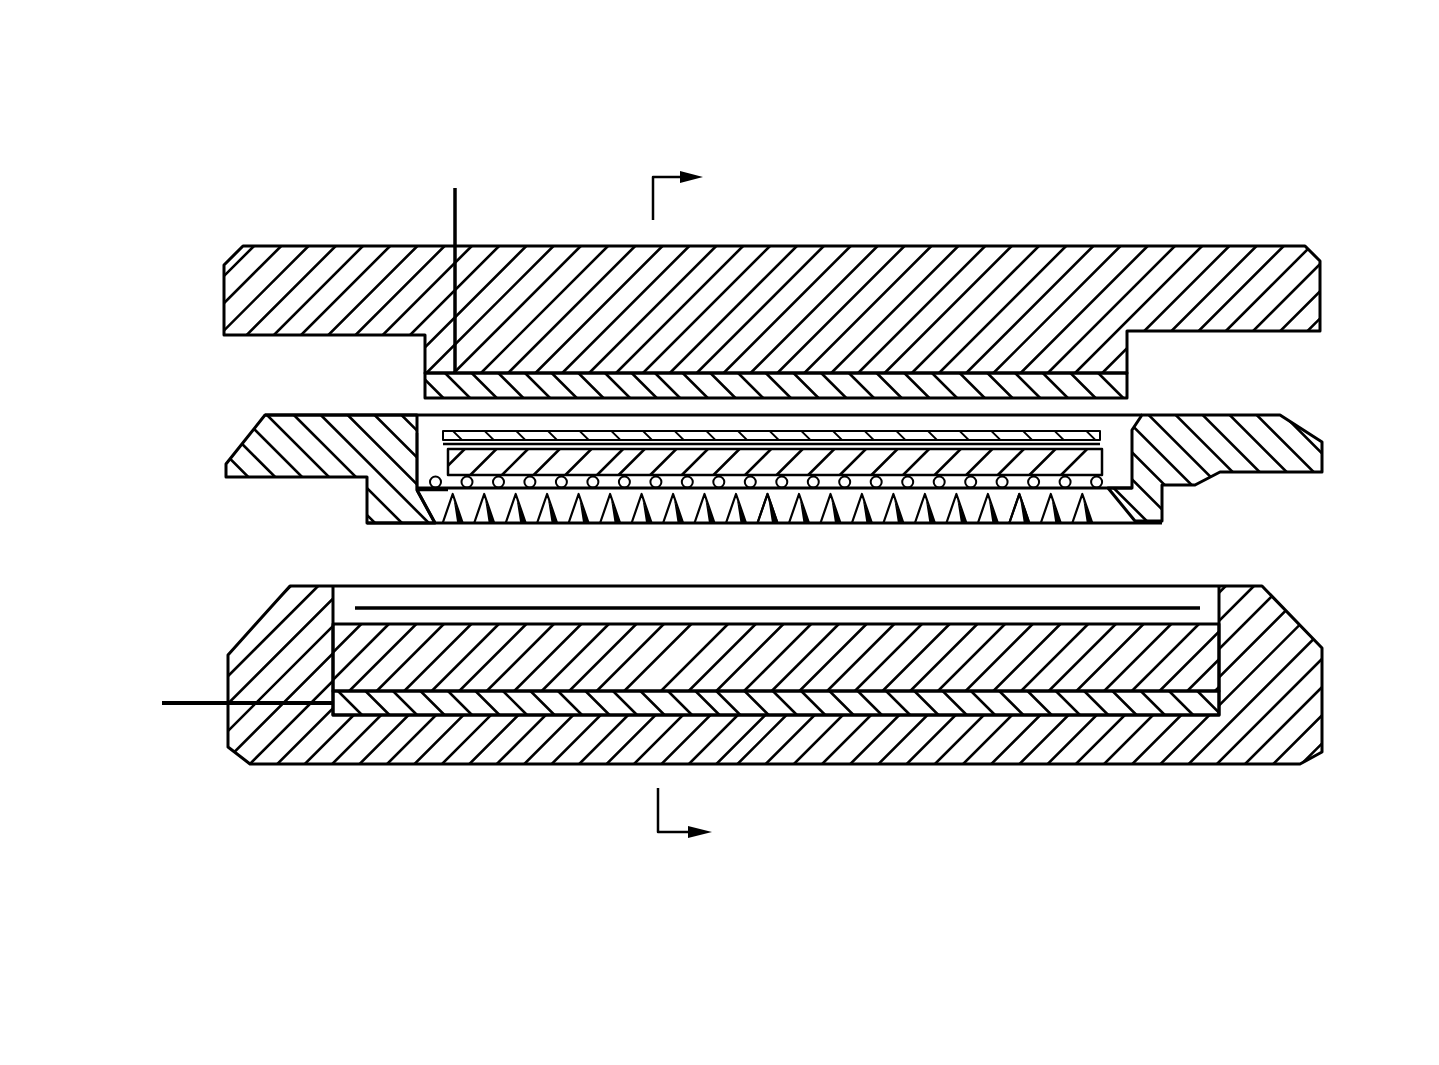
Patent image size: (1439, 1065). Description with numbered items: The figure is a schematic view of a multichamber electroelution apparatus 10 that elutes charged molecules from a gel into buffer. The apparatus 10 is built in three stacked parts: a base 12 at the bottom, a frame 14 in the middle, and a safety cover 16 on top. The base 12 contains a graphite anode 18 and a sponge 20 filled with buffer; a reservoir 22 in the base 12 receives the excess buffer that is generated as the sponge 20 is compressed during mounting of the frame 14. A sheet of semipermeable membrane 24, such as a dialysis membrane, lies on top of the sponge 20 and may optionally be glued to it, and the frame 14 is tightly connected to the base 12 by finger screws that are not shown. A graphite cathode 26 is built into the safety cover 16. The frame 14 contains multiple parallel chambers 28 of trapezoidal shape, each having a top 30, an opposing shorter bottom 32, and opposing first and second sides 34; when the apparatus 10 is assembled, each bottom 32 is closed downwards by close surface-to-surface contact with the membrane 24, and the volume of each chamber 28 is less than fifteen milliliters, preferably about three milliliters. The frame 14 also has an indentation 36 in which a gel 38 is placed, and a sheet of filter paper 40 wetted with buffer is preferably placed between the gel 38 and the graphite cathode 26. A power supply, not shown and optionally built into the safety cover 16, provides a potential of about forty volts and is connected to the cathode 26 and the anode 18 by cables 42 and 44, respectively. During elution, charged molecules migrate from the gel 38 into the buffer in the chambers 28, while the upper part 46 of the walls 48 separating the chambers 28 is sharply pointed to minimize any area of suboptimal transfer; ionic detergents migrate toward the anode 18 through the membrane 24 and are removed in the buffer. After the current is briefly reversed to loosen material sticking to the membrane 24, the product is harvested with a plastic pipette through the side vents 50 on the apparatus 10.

The multichamber electroelution apparatus 10 is at (1284, 150).
The base 12 is at (232, 768).
The frame 14 is at (220, 471).
The safety cover 16 is at (258, 238).
The graphite anode 18 is at (432, 708).
The sponge 20 is at (1175, 657).
The reservoir 22 is at (342, 613).
The semipermeable membrane 24 is at (1127, 607).
The graphite cathode 26 is at (1020, 385).
The chambers 28 is at (462, 507).
The top 30 is at (774, 531).
The bottom 32 is at (687, 520).
The first and second sides 34 is at (788, 543).
The indentation 36 is at (432, 447).
The gel 38 is at (1087, 457).
The filter paper 40 is at (1067, 432).
The cable 42 is at (458, 214).
The cable 44 is at (188, 700).
The upper part 46 is at (908, 490).
The walls 48 is at (1020, 520).
The side vents 50 is at (455, 517).